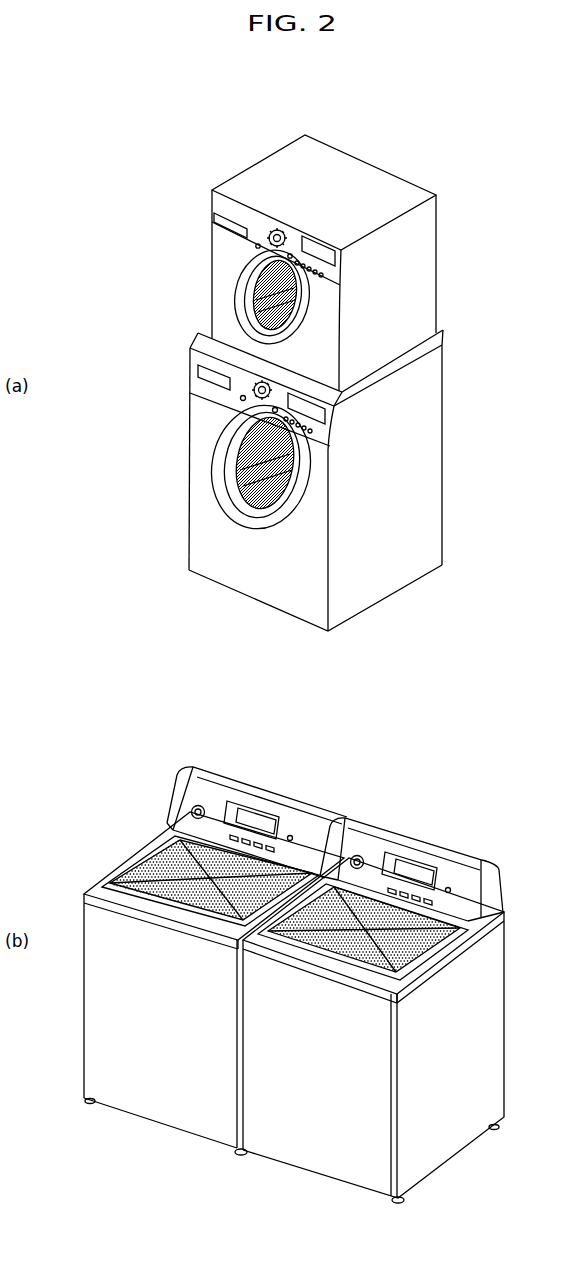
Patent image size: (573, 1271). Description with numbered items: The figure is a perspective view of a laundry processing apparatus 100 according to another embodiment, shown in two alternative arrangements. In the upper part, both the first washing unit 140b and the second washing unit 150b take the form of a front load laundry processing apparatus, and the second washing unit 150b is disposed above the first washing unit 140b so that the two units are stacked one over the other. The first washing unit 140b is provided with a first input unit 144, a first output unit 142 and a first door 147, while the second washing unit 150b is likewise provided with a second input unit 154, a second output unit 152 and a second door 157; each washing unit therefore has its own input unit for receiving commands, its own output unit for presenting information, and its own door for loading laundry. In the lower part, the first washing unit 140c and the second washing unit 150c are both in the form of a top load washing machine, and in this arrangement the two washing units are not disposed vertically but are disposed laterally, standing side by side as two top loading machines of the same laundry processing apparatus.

The laundry treating apparatus 100 is at (193, 105).
The second washing unit 150b is at (380, 182).
The second output unit 152 is at (278, 230).
The second input unit 154 is at (318, 253).
The second door 157 is at (306, 317).
The first washing unit 140b is at (428, 427).
The first output unit 142 is at (253, 399).
The first input unit 144 is at (307, 408).
The first door 147 is at (284, 521).
The first washing unit 140c is at (274, 793).
The second washing unit 150c is at (418, 840).